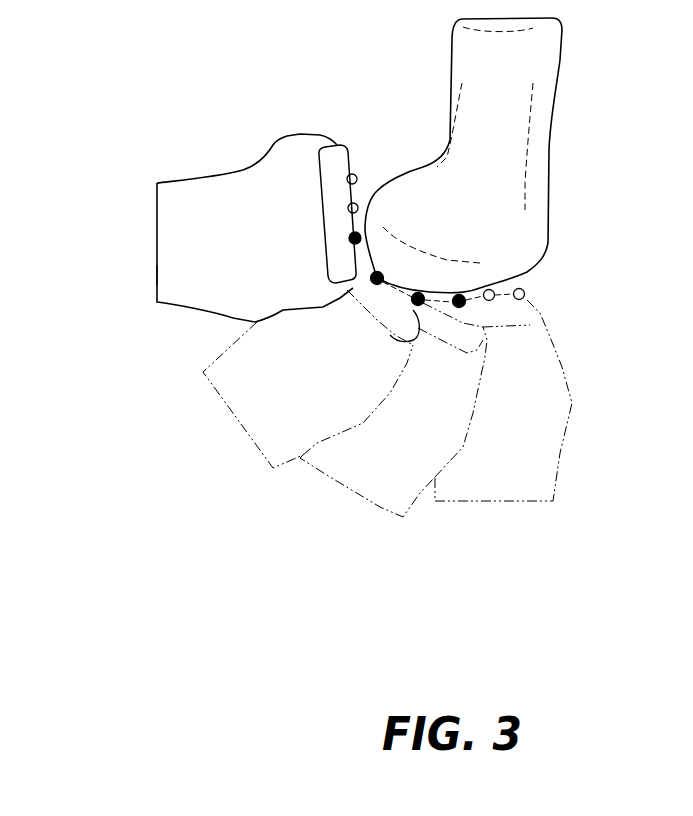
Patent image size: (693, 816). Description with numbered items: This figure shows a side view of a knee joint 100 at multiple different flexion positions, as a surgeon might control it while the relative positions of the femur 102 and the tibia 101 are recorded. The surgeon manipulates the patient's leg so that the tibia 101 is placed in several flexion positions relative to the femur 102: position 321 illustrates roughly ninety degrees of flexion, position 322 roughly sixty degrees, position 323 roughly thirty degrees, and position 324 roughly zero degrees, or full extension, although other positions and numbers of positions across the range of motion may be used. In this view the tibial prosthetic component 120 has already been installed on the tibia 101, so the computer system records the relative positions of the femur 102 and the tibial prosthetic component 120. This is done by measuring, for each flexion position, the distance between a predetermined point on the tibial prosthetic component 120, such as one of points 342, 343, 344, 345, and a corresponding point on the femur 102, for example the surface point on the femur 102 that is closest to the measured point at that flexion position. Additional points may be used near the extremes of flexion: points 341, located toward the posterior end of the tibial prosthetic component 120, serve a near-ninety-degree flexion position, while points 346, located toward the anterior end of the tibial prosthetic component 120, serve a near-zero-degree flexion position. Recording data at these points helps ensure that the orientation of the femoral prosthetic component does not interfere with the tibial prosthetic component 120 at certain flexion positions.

The knee joint 100 is at (186, 56).
The tibia 101 is at (177, 198).
The femur 102 is at (553, 65).
The tibial prosthetic component 120 is at (327, 175).
The position 321 is at (156, 274).
The position 322 is at (230, 413).
The position 323 is at (332, 485).
The position 324 is at (517, 502).
The points 341 is at (362, 240).
The point 342 is at (348, 238).
The point 343 is at (379, 272).
The point 344 is at (413, 302).
The point 345 is at (459, 295).
The points 346 is at (523, 290).